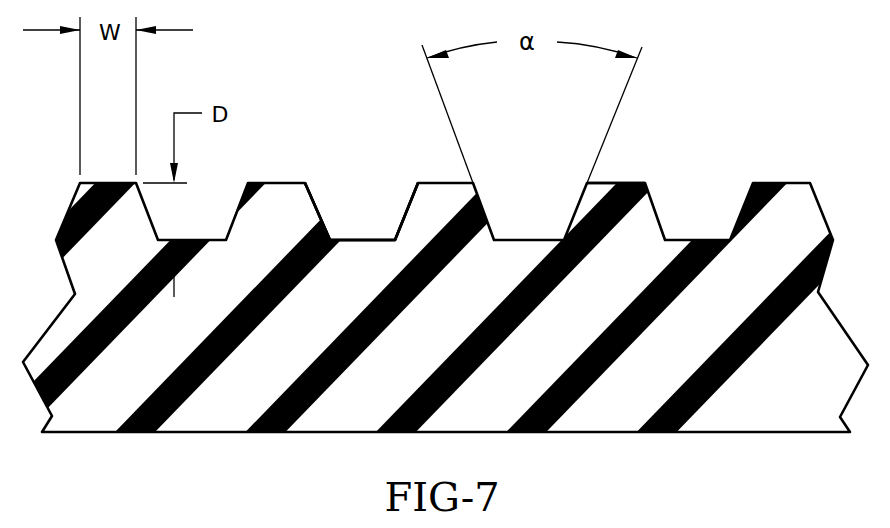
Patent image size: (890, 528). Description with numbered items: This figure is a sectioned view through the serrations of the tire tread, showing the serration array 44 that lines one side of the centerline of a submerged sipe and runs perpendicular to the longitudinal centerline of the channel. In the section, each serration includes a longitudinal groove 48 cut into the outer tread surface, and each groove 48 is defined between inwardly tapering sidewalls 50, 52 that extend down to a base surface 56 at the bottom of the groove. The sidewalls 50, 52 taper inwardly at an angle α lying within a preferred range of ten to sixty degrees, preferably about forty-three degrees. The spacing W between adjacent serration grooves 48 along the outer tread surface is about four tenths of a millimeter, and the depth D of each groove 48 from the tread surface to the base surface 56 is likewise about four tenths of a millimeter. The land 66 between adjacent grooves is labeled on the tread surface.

The serration array 44 is at (725, 181).
The longitudinal groove 48 is at (369, 155).
The sidewall 52 is at (313, 197).
The sidewall 50 is at (410, 196).
The base surface 56 is at (365, 238).
The land between grooves 66 is at (592, 181).